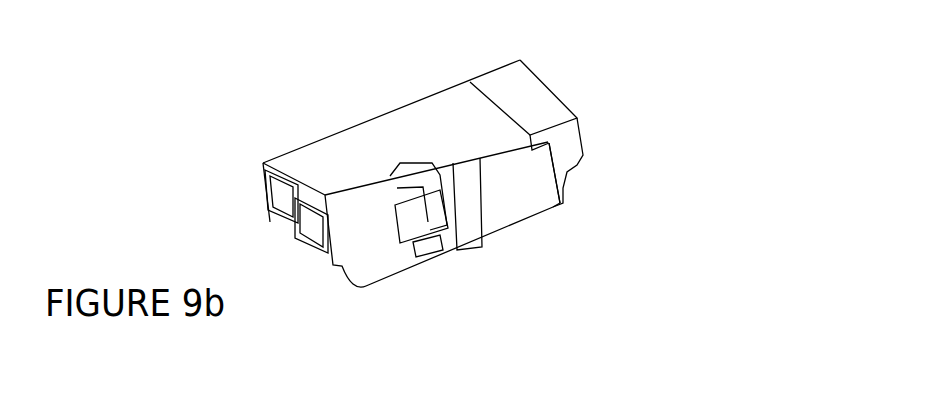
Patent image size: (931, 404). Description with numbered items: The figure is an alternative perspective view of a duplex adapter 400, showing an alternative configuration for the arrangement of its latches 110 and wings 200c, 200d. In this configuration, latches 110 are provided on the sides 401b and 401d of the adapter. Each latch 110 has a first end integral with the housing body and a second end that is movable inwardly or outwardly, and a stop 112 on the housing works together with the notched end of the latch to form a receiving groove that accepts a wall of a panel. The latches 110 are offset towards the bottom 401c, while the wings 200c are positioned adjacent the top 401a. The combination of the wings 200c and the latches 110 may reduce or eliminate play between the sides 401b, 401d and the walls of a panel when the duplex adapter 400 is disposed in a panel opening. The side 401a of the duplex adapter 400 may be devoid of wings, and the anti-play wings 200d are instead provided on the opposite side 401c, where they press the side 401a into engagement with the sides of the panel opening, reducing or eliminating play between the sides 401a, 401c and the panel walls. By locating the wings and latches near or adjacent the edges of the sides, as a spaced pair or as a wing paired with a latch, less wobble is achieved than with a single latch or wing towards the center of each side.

The duplex adapter 400 is at (385, 189).
The top side 401a is at (544, 211).
The side 401b is at (264, 190).
The bottom side 401c is at (475, 112).
The side 401d is at (537, 158).
The latch 110 is at (413, 218).
The stop 112 is at (465, 240).
The wing 200c is at (435, 250).
The anti-play wing 200d is at (407, 177).